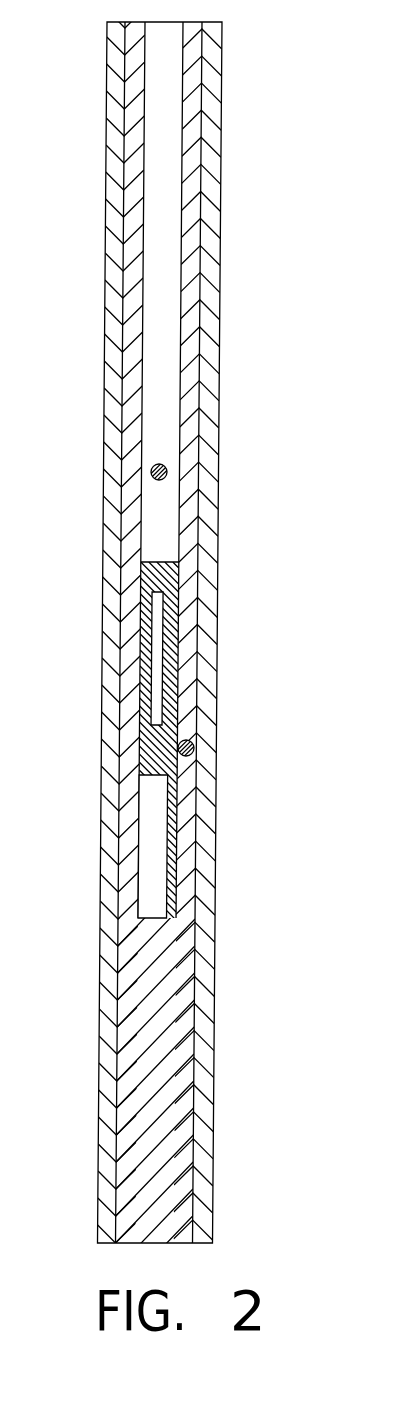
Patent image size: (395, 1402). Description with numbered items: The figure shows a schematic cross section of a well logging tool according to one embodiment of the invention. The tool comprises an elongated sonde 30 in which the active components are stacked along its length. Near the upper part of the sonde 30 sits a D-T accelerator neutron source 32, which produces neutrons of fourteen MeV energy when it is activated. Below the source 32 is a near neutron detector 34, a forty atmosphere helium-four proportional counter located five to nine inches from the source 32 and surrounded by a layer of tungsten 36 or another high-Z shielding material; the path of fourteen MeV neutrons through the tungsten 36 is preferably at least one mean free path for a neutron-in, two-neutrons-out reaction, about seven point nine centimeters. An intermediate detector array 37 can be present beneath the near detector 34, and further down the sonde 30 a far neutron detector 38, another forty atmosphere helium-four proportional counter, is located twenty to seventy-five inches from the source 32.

The sonde 30 is at (102, 422).
The D-T accelerator neutron source 32 is at (168, 473).
The near neutron detector 34 is at (158, 664).
The layer of tungsten 36 is at (172, 600).
The intermediate detector array 37 is at (194, 752).
The far neutron detector 38 is at (152, 857).